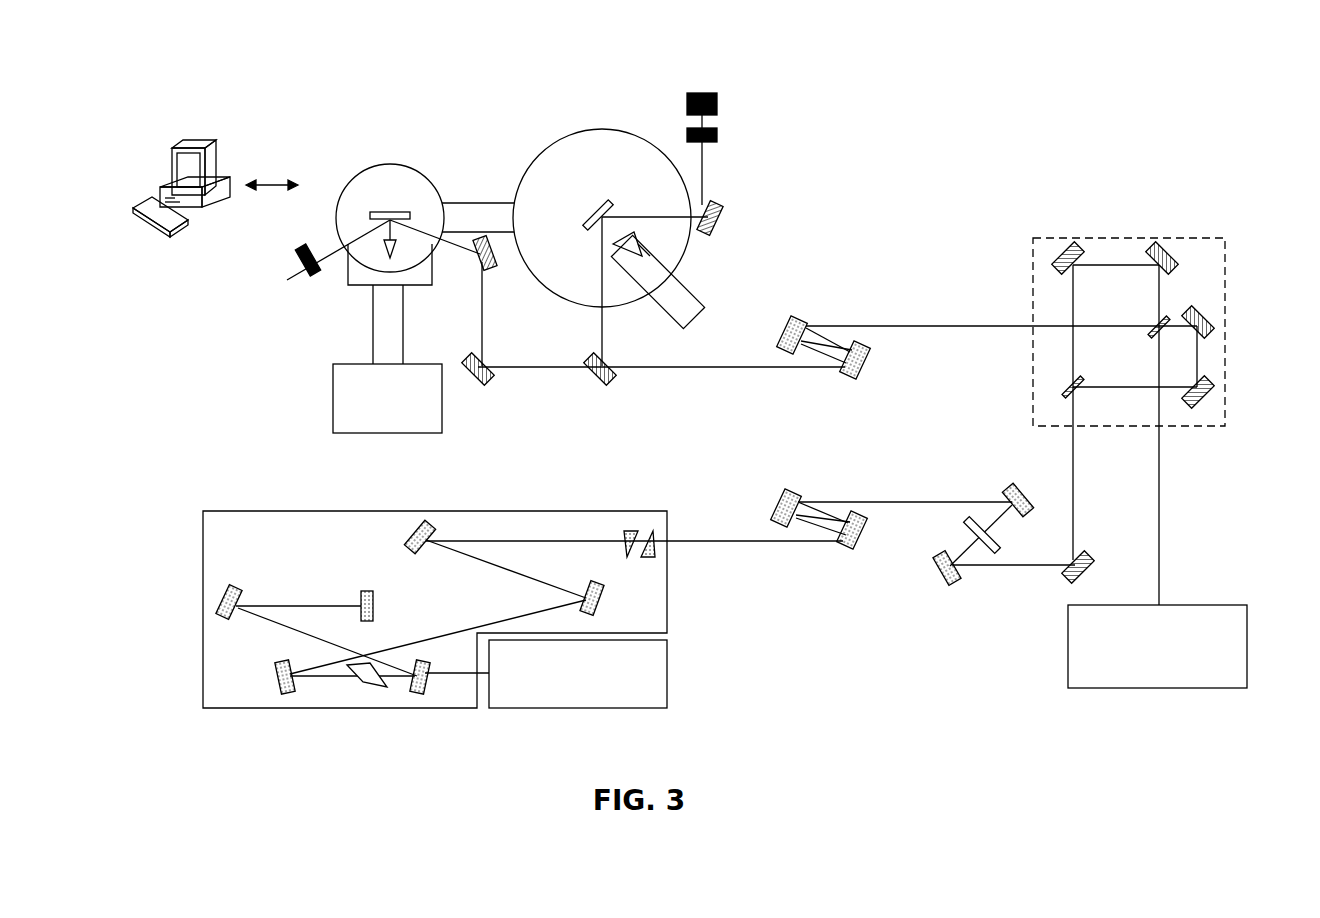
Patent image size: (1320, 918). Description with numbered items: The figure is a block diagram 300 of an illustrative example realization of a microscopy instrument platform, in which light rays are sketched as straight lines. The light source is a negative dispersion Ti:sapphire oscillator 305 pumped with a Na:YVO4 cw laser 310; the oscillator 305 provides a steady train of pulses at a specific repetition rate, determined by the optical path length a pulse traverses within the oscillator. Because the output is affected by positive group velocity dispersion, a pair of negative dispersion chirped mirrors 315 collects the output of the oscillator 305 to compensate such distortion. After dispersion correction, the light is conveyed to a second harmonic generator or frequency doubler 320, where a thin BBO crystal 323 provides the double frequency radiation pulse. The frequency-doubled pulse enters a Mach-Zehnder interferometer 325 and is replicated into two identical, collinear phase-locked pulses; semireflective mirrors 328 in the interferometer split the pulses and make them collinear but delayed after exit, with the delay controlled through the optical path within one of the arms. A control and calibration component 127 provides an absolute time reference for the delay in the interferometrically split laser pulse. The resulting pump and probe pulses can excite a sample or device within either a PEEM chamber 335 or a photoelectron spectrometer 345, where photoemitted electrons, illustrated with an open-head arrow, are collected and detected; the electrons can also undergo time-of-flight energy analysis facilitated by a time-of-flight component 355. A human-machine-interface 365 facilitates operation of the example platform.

The block diagram 300 is at (1119, 52).
The human-machine-interface 365 is at (189, 139).
The photoelectron spectrometer 345 is at (392, 164).
The time-of-flight component 355 is at (333, 390).
The PEEM chamber 335 is at (603, 129).
The pair of negative dispersion chirped mirrors 315 is at (824, 391).
The second harmonic generator 320 is at (976, 483).
The BBO crystal 323 is at (1002, 540).
The Mach-Zehnder interferometer 325 is at (1224, 328).
The semireflective mirrors 328 is at (1167, 314).
The control and calibration component 127 is at (1247, 648).
The negative dispersion Ti:sapphire oscillator 305 is at (203, 590).
The Na:YVO4 cw laser 310 is at (667, 670).